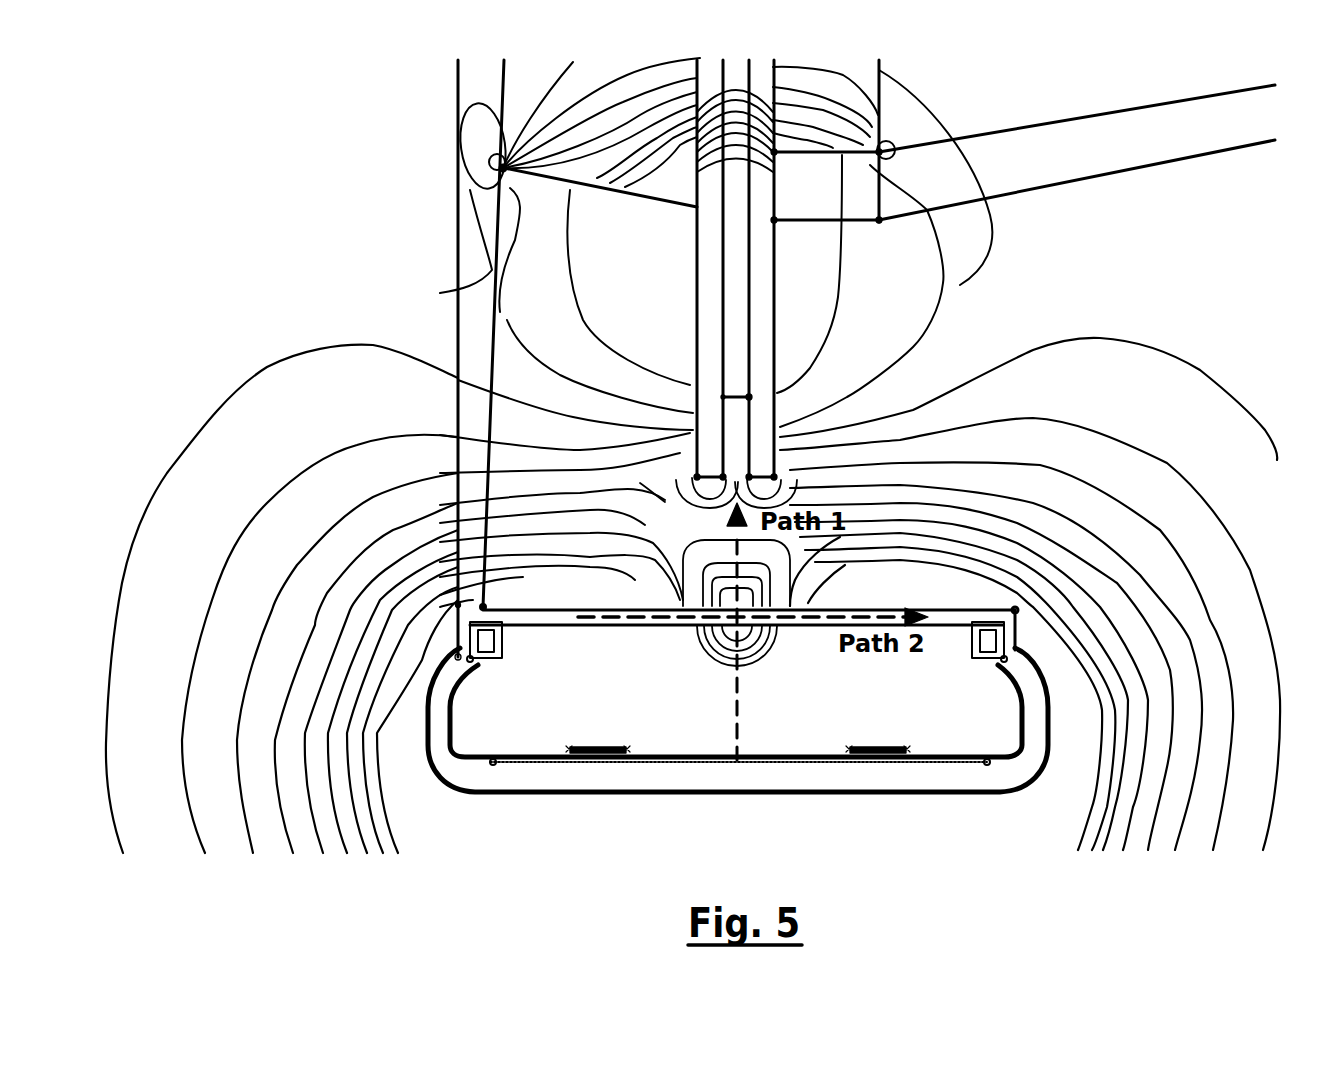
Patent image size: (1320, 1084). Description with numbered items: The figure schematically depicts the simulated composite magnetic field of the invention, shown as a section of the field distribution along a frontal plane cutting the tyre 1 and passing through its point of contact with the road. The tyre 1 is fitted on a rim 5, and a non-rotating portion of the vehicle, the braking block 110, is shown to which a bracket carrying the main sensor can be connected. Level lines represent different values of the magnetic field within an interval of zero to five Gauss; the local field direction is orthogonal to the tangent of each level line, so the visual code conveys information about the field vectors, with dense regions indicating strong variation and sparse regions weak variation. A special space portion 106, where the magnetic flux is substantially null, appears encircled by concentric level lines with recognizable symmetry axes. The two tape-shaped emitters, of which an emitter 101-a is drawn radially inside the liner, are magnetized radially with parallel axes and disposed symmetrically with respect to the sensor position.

The tyre 1 is at (425, 755).
The rim 5 is at (457, 292).
The receiver coil component 101-a is at (598, 747).
The special space portion 106 is at (737, 612).
The braking block 110 is at (697, 288).